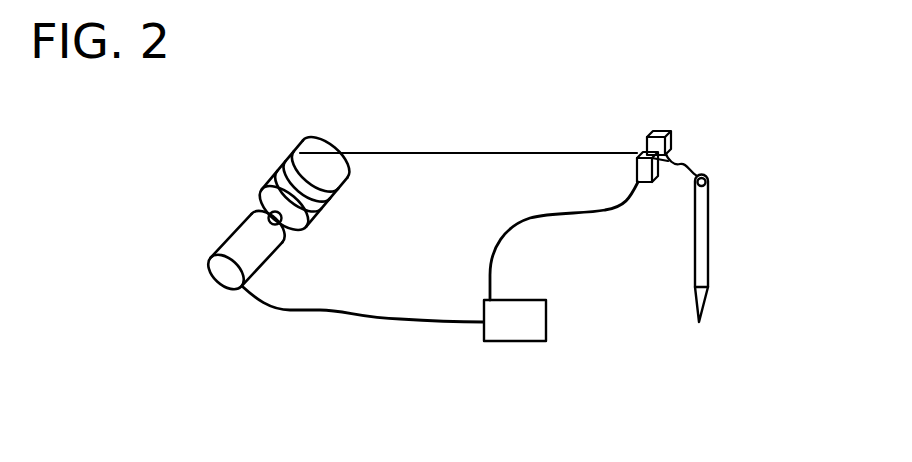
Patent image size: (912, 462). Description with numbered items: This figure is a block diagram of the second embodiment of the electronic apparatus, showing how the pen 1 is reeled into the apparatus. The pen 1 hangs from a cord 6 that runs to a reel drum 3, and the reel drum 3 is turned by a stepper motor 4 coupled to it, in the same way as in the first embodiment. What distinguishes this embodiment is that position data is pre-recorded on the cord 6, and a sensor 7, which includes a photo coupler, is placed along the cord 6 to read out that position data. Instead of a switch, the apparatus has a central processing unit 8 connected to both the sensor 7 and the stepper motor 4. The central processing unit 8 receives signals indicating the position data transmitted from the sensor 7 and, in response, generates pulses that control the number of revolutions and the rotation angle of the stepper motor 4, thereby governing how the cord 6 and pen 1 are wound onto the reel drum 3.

The stylus 1 is at (702, 227).
The reel drum 3 is at (305, 142).
The stepper motor 4 is at (228, 235).
The cord 6 is at (686, 170).
The sensor 7 is at (672, 140).
The central processing unit (CPU) 8 is at (508, 340).